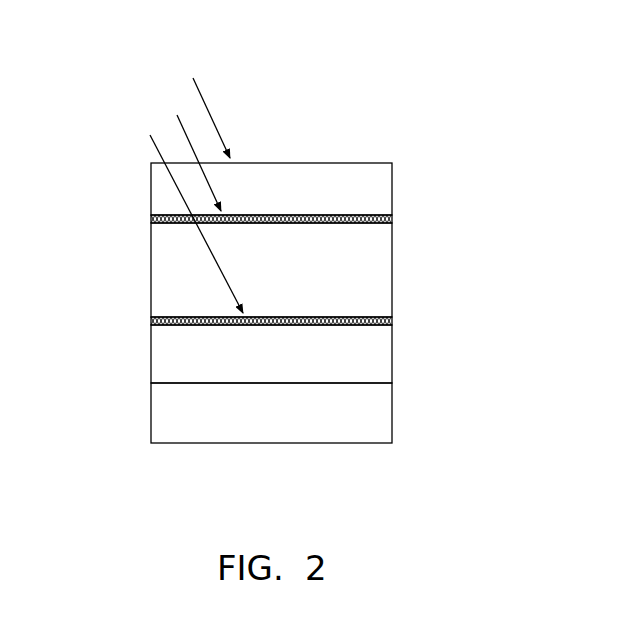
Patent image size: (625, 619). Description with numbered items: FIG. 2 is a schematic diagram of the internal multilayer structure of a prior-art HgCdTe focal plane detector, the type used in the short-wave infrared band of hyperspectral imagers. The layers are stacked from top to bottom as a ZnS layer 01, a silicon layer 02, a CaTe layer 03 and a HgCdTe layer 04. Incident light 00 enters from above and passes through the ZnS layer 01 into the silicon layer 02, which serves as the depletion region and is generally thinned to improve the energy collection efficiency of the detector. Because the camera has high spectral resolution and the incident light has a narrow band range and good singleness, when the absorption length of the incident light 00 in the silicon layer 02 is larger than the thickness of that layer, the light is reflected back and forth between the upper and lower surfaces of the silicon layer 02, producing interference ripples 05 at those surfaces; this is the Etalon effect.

The incident light 00 is at (205, 103).
The ZnS layer 01 is at (392, 188).
The silicon layer 02 is at (392, 275).
The CaTe layer 03 is at (392, 375).
The HgCdTe layer 04 is at (392, 420).
The interference ripples 05 is at (150, 218).